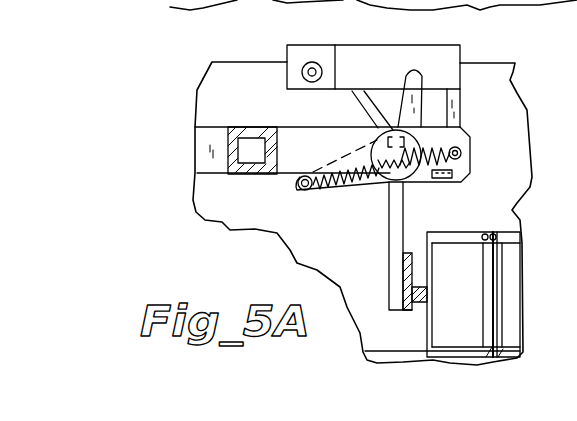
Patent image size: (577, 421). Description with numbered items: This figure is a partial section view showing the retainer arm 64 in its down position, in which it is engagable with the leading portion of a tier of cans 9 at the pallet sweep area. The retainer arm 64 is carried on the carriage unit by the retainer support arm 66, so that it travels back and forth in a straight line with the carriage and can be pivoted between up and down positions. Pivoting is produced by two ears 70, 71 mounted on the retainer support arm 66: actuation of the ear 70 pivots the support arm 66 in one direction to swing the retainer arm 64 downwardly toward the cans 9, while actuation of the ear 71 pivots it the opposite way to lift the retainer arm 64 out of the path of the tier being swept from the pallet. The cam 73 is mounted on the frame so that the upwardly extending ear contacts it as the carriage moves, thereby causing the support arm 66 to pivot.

The cans 9 is at (485, 327).
The retainer arm 64 is at (424, 312).
The retainer support arm 66 is at (392, 219).
The ear 70 is at (365, 90).
The ear 71 is at (420, 82).
The cam 73 is at (305, 68).